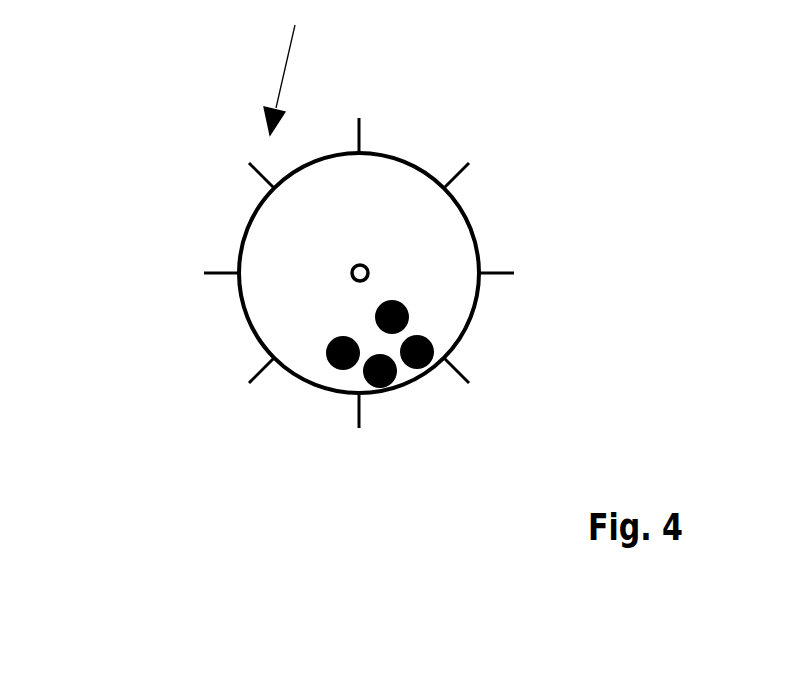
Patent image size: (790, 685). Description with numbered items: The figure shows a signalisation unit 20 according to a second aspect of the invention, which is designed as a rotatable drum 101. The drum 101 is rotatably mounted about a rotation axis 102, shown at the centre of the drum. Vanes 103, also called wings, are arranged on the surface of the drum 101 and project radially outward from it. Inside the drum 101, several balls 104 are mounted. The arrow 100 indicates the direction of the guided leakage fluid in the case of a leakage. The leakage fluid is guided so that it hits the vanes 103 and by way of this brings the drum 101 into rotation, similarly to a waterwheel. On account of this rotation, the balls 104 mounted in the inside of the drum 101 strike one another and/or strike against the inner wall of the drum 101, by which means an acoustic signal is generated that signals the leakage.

The signalisation unit 20 is at (133, 82).
The arrow 100 is at (300, 59).
The rotatable drum 101 is at (455, 307).
The rotation axis 102 is at (348, 278).
The vanes 103 is at (251, 172).
The balls 104 is at (400, 385).